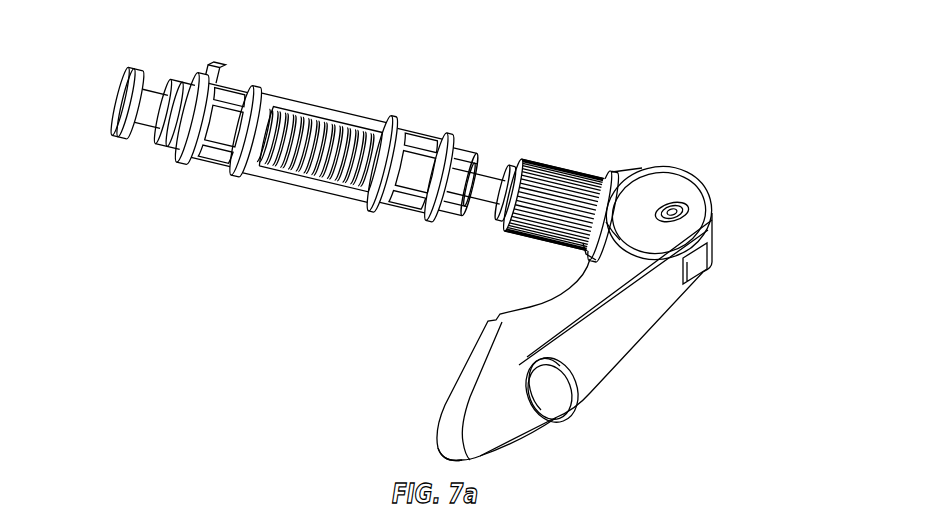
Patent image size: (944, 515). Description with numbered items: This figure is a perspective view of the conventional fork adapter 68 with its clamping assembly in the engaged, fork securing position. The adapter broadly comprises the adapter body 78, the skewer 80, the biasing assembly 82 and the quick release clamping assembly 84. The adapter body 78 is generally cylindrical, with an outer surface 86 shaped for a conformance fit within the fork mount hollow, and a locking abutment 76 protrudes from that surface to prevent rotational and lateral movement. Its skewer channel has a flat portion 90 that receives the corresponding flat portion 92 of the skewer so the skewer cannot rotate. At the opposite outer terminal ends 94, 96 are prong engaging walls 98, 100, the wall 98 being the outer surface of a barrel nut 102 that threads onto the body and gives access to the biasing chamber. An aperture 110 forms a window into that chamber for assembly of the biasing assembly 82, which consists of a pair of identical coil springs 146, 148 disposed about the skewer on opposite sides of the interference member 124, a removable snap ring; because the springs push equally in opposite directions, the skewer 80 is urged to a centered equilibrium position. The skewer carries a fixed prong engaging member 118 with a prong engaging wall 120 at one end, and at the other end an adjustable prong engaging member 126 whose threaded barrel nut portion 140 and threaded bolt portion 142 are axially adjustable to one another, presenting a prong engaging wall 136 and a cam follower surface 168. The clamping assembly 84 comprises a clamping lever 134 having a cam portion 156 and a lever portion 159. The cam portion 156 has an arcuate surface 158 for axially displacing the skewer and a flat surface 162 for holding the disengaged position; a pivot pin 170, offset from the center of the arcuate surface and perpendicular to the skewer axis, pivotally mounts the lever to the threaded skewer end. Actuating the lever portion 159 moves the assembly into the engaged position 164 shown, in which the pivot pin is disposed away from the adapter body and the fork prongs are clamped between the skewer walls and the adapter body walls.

The conventional fork adapter 68 is at (548, 156).
The locking abutment 76 is at (233, 57).
The adapter body 78 is at (425, 130).
The skewer 80 is at (152, 97).
The biasing assembly 82 is at (304, 181).
The quick release clamping assembly 84 is at (714, 321).
The outer surface 86 is at (377, 208).
The flat portion 90 is at (491, 190).
The flat portion 92 is at (515, 157).
The outer terminal end 94 is at (187, 77).
The outer terminal end 96 is at (481, 158).
The prong engaging wall 98 is at (160, 138).
The prong engaging wall 100 is at (472, 214).
The barrel nut 102 is at (168, 139).
The aperture 110 is at (341, 190).
The fixed prong engaging member 118 is at (118, 98).
The prong engaging wall 120 is at (137, 137).
The interference member 124 is at (316, 132).
The adjustable prong engaging member 126 is at (576, 170).
The clamping lever 134 is at (617, 337).
The prong engaging wall 136 is at (501, 204).
The threaded barrel nut portion 140 is at (556, 226).
The threaded bolt portion 142 is at (612, 170).
The coil spring 146 is at (275, 100).
The coil spring 148 is at (355, 120).
The cam portion 156 is at (625, 285).
The arcuate surface 158 is at (660, 167).
The lever portion 159 is at (616, 416).
The flat surface 162 is at (700, 278).
The engaged position 164 is at (677, 374).
The cam follower surface 168 is at (617, 233).
The pivot pin 170 is at (678, 214).